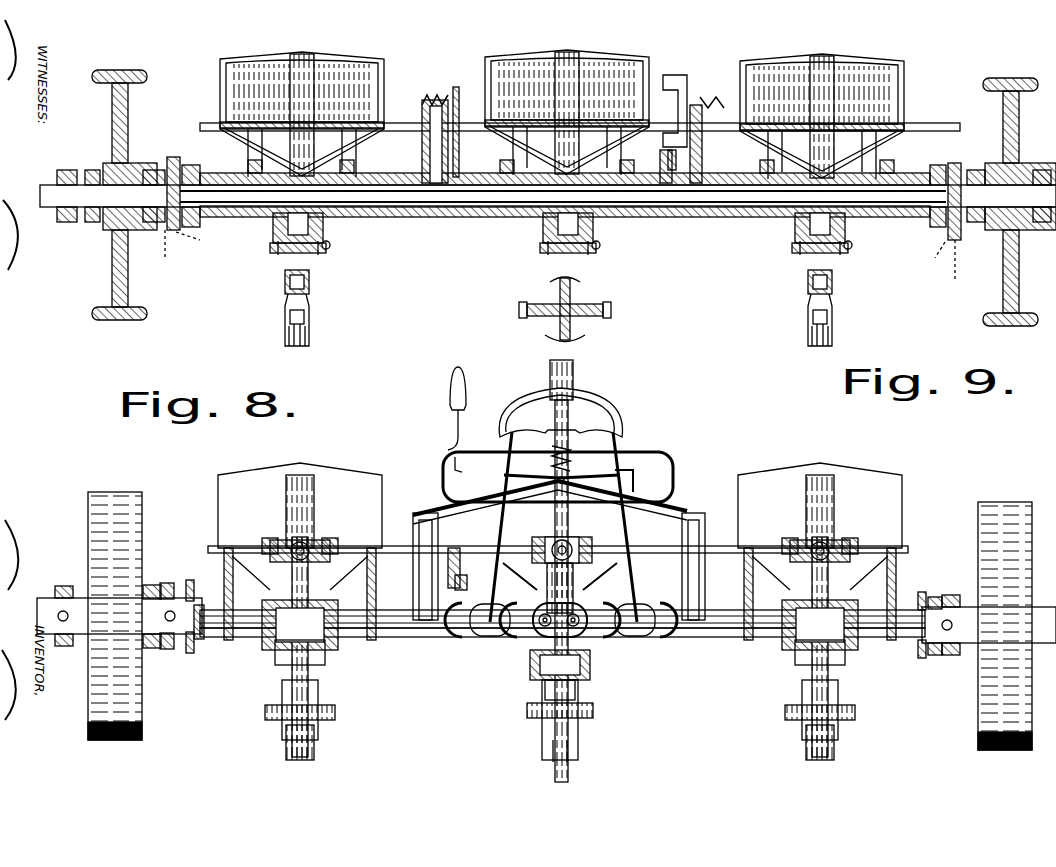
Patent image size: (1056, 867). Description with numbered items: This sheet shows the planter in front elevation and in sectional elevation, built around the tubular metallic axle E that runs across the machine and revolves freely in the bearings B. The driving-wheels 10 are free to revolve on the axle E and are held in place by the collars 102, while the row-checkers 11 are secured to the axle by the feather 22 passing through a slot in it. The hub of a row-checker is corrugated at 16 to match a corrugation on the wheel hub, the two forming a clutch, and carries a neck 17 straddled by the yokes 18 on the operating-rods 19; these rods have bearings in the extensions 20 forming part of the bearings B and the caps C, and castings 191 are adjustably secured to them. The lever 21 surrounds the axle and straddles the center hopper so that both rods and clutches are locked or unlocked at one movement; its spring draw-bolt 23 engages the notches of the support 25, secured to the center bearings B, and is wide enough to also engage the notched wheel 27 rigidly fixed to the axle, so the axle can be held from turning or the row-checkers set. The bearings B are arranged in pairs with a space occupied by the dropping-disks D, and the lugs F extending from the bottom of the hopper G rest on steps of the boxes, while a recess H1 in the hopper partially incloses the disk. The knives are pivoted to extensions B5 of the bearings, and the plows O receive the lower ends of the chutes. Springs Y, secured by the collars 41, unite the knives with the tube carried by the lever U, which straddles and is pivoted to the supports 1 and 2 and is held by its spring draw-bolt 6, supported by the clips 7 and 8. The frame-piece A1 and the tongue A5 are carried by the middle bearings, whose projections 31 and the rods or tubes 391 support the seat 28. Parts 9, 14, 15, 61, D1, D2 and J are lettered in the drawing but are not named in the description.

In FIG. 8, the support 1 is at (418, 157).
In FIG. 9, the support 1 is at (430, 572).
In FIG. 8, the support 2 is at (704, 160).
In FIG. 9, the spring draw-bolt 6 is at (620, 420).
In FIG. 9, the clip 7 is at (552, 459).
In FIG. 9, the clip 8 is at (675, 527).
In FIG. 9, the lever arm 9 is at (570, 526).
In FIG. 8, the driving-wheel 10 is at (110, 145).
In FIG. 9, the driving-wheel 10 is at (145, 528).
In FIG. 8, the row-checker 11 is at (55, 210).
In FIG. 9, the row-checker 11 is at (546, 620).
In FIG. 9, the axle bolt hole 14 is at (517, 615).
In FIG. 8, the nut 15 is at (68, 170).
In FIG. 9, the nut 15 is at (68, 580).
In FIG. 8, the corrugation of row-checker hub 16 is at (152, 170).
In FIG. 9, the corrugation of row-checker hub 16 is at (158, 648).
In FIG. 8, the neck 17 is at (185, 162).
In FIG. 9, the neck 17 is at (195, 585).
In FIG. 8, the yoke 18 is at (560, 249).
In FIG. 9, the yoke 18 is at (198, 640).
In FIG. 8, the operating-rod 19 is at (420, 222).
In FIG. 8, the extension 20 is at (238, 222).
In FIG. 8, the lever 21 is at (460, 110).
In FIG. 9, the lever 21 is at (450, 450).
In FIG. 8, the feather 22 is at (561, 266).
In FIG. 8, the spring draw-bolt 23 is at (678, 160).
In FIG. 9, the spring draw-bolt 23 is at (450, 380).
In FIG. 8, the support 25 is at (660, 160).
In FIG. 9, the support 25 is at (473, 580).
In FIG. 8, the notched wheel 27 is at (640, 268).
In FIG. 9, the notched wheel 27 is at (445, 650).
In FIG. 9, the seat 28 is at (540, 395).
In FIG. 9, the projection 31 is at (500, 638).
In FIG. 9, the collar 41 is at (262, 546).
In FIG. 8, the bracket 61 is at (561, 174).
In FIG. 8, the collar 102 is at (88, 222).
In FIG. 9, the collar 102 is at (80, 648).
In FIG. 8, the casting 191 is at (455, 218).
In FIG. 9, the rod or tube 391 is at (512, 440).
In FIG. 9, the frame-piece A1 is at (458, 649).
In FIG. 9, the tongue A5 is at (530, 655).
In FIG. 8, the bearing B is at (265, 222).
In FIG. 9, the bearing B is at (569, 651).
In FIG. 9, the extension of bearing B5 is at (865, 682).
In FIG. 8, the cap C is at (578, 166).
In FIG. 9, the cap C is at (589, 593).
In FIG. 8, the dropping-disk D is at (340, 245).
In FIG. 8, the hanger arm D1 is at (340, 262).
In FIG. 8, the hanger base D2 is at (605, 278).
In FIG. 9, the hanger base D2 is at (551, 663).
In FIG. 8, the axle E is at (230, 172).
In FIG. 9, the axle E is at (561, 596).
In FIG. 8, the lug F is at (598, 342).
In FIG. 9, the lug F is at (577, 659).
In FIG. 8, the hopper G is at (384, 70).
In FIG. 9, the hopper G is at (560, 611).
In FIG. 8, the recess H1 is at (225, 122).
In FIG. 9, the recess H1 is at (290, 505).
In FIG. 8, the shovel standard J is at (310, 278).
In FIG. 9, the shovel standard J is at (540, 700).
In FIG. 8, the plow O is at (283, 330).
In FIG. 9, the plow O is at (285, 748).
In FIG. 8, the lever U is at (565, 95).
In FIG. 9, the lever U is at (575, 378).
In FIG. 8, the spring Y is at (418, 125).
In FIG. 9, the spring Y is at (563, 533).